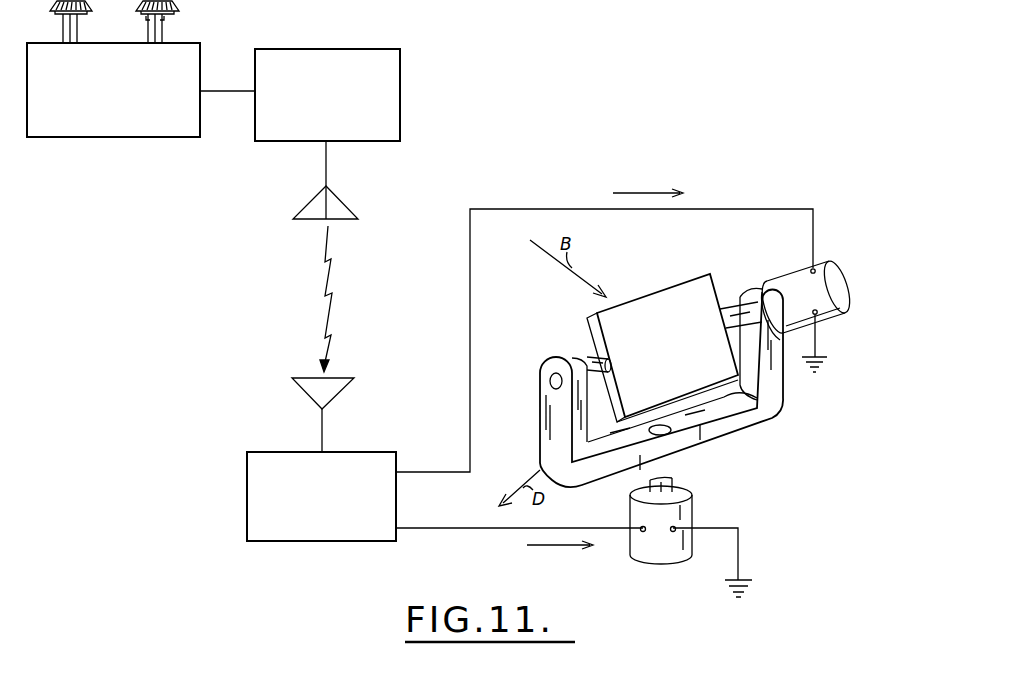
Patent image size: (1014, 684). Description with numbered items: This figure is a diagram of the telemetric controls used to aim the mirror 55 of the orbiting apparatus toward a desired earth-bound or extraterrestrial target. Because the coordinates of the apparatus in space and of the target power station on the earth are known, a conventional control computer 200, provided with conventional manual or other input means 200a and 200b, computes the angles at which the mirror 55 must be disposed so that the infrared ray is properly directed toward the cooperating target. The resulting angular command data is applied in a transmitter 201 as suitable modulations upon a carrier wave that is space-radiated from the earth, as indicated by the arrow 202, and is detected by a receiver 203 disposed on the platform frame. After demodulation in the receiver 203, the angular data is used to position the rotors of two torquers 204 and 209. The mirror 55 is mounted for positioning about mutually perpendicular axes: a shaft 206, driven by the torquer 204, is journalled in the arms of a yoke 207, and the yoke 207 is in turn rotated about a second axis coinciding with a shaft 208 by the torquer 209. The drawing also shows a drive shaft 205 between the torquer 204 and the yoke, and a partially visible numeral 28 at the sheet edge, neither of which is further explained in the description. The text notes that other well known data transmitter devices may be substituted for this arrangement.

The control computer 200 is at (105, 138).
The input means 200a is at (73, 36).
The input means 200b is at (162, 33).
The transmitter 201 is at (400, 97).
The arrow 202 is at (328, 296).
The receiver 203 is at (247, 492).
The torquer 204 is at (838, 268).
The drive shaft 205 is at (759, 282).
The shaft 206 is at (588, 352).
The yoke 207 is at (773, 417).
The shaft 208 is at (673, 474).
The torquer 209 is at (688, 517).
The mirror 55 is at (664, 290).
The reference numeral (partially visible) 28 is at (174, 679).